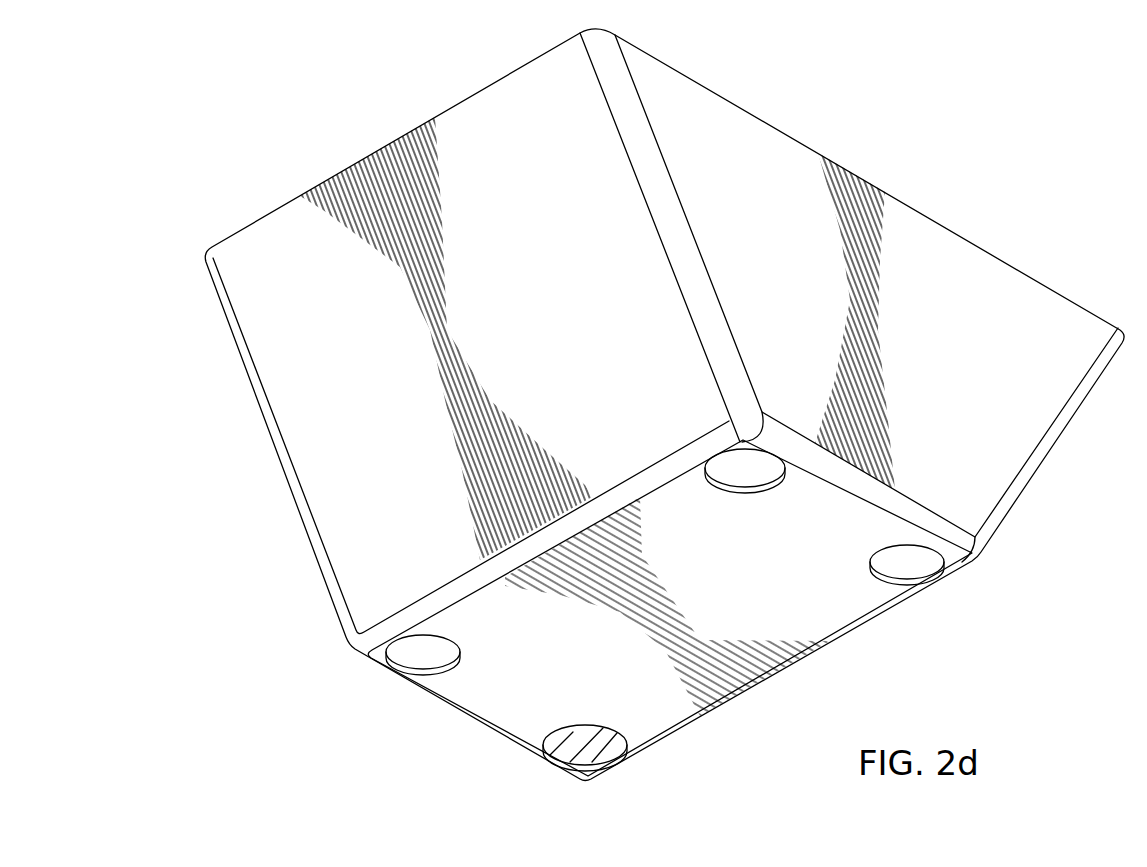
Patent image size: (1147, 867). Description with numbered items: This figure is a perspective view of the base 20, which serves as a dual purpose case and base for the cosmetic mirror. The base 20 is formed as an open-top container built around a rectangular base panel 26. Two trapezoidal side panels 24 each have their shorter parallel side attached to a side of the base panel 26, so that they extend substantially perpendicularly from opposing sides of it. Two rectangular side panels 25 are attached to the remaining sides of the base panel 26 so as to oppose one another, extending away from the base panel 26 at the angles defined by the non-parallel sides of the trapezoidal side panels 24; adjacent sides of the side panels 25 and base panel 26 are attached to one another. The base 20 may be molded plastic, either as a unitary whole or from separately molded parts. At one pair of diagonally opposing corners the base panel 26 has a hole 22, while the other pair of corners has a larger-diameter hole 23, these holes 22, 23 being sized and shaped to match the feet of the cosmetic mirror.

The base 20 is at (1012, 259).
The hole 22 is at (910, 568).
The larger-diameter hole 23 is at (744, 478).
The trapezoidal side panel 24 is at (786, 150).
The rectangular side panel 25 is at (472, 123).
The base panel 26 is at (675, 708).